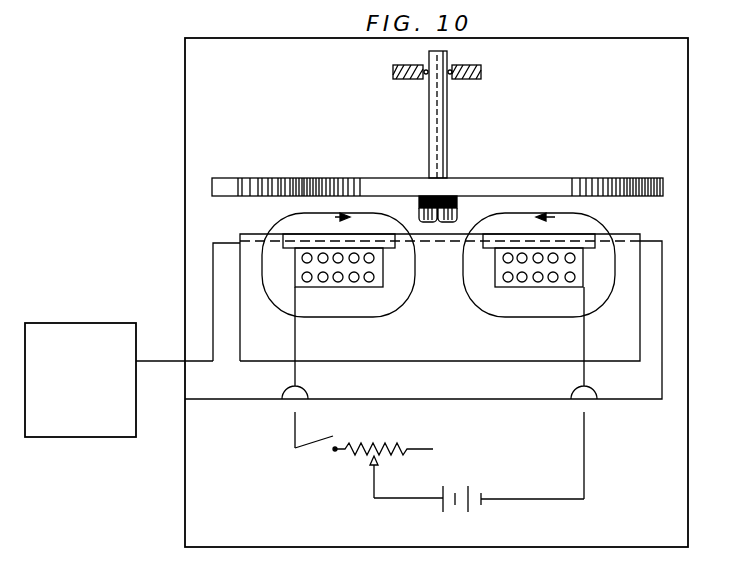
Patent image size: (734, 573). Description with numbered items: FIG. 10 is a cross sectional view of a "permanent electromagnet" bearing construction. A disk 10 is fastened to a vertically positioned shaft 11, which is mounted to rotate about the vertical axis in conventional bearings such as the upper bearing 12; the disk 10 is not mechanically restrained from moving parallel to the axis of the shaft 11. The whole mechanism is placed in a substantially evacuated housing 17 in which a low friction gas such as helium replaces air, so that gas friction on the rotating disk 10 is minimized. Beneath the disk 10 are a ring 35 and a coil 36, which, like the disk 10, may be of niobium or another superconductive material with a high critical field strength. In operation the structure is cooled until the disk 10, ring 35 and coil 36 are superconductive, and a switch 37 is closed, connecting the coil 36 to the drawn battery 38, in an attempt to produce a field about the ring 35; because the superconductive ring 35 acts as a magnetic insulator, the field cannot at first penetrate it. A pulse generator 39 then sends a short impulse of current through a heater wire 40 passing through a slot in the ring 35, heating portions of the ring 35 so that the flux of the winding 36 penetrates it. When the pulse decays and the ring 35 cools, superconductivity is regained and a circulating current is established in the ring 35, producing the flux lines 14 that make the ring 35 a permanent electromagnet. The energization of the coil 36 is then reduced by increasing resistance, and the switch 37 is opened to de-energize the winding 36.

The disk 10 is at (630, 178).
The shaft 11 is at (447, 155).
The upper bearing 12 is at (393, 70).
The flux lines 14 is at (275, 308).
The housing 17 is at (185, 205).
The ring 35 is at (587, 242).
The coil 36 is at (571, 283).
The switch 37 is at (300, 448).
The battery 38 is at (460, 484).
The pulse generator 39 is at (78, 424).
The heater wire 40 is at (213, 277).